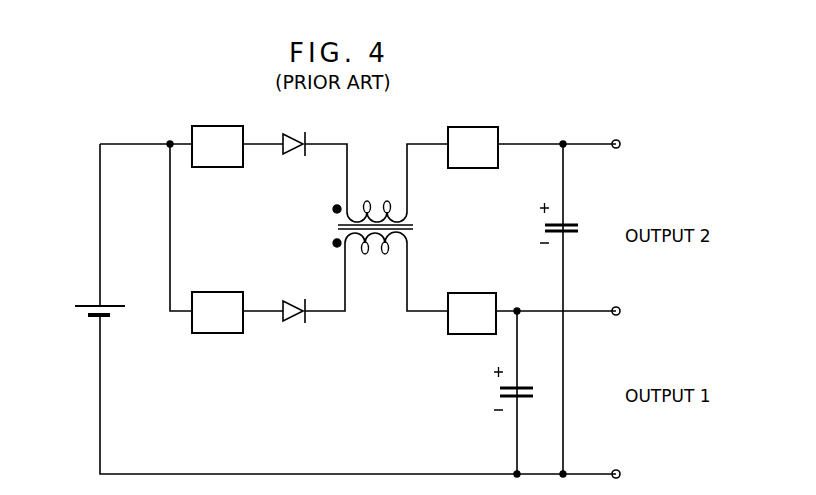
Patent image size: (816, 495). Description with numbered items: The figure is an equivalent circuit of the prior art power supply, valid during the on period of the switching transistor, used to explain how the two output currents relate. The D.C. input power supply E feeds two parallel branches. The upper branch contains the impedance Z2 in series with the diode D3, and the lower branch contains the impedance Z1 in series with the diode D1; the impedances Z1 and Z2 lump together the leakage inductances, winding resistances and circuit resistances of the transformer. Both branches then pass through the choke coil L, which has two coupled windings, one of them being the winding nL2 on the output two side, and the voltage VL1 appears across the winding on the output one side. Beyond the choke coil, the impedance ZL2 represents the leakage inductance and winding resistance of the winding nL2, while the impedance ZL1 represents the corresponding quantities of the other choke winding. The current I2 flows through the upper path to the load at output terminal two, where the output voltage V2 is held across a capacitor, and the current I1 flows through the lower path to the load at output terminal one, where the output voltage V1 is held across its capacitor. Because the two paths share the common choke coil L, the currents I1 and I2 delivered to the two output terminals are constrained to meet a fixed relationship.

The D.C. input power supply E is at (82, 313).
The impedance Z2 is at (217, 146).
The impedance Z1 is at (217, 312).
The impedance of choke coil winding ZL2 is at (473, 147).
The impedance of choke coil winding ZL1 is at (472, 313).
The diode D3 is at (293, 156).
The diode D1 is at (297, 300).
The choke coil L is at (417, 228).
The winding of choke coil nL2 is at (407, 192).
The voltage across choke coil winding VL1 is at (340, 316).
The output voltage V2 is at (575, 223).
The output voltage V1 is at (496, 388).
The current I2 is at (108, 193).
The current I1 is at (130, 193).